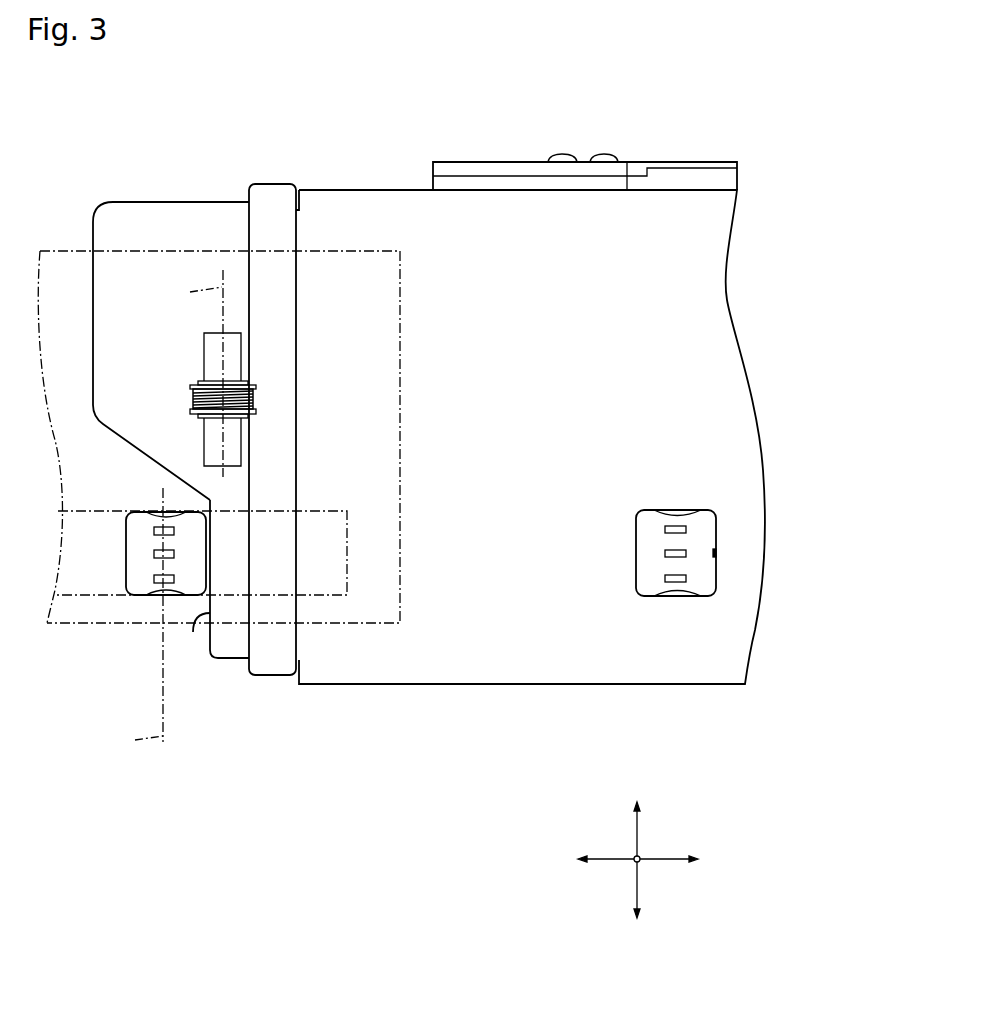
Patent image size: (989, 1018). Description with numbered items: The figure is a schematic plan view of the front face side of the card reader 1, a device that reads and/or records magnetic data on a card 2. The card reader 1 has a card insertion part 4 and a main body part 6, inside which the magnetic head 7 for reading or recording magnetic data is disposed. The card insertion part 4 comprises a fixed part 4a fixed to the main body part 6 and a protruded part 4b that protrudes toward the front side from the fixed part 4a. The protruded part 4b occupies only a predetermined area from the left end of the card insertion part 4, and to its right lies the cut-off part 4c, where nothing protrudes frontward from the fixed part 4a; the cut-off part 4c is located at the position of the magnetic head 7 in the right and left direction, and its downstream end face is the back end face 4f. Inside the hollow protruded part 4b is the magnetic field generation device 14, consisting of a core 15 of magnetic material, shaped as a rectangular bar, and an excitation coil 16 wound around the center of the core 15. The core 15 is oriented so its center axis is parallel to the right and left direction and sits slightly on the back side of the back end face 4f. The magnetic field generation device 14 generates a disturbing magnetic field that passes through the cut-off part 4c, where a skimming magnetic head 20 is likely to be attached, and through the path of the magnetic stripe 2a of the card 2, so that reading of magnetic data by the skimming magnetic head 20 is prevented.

The card reader 1 is at (691, 81).
The card 2 is at (400, 399).
The magnetic stripe 2a is at (347, 562).
The card insertion part 4 is at (273, 184).
The fixed part 4a is at (272, 429).
The protruded part 4b is at (172, 202).
The cut-off part 4c is at (125, 653).
The back end face 4f is at (193, 632).
The main body part 6 is at (502, 162).
The magnetic head 7 is at (676, 510).
The magnetic field generation device 14 is at (204, 351).
The core 15 is at (222, 399).
The coil 16 is at (193, 400).
The skimming magnetic head 20 is at (131, 511).